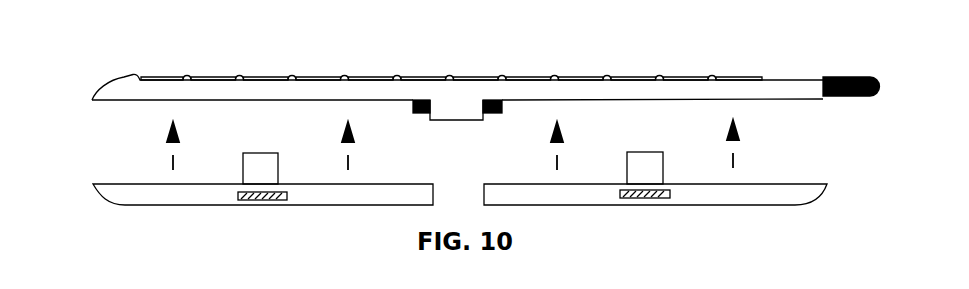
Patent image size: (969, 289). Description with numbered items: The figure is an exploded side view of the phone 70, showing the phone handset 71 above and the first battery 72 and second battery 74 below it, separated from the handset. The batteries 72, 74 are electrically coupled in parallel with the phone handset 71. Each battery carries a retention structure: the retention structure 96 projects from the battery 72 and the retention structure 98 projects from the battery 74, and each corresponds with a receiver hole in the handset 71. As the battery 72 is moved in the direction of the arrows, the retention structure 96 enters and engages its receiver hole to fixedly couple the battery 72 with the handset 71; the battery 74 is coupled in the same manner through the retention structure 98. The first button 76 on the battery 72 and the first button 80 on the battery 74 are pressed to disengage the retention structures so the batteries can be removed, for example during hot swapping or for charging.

The phone 70 is at (78, 195).
The phone handset 71 is at (810, 77).
The first battery 72 is at (180, 205).
The second battery 74 is at (755, 205).
The first button 76 is at (265, 200).
The first button 80 is at (640, 198).
The retention structure 96 is at (247, 153).
The retention structure 98 is at (633, 152).